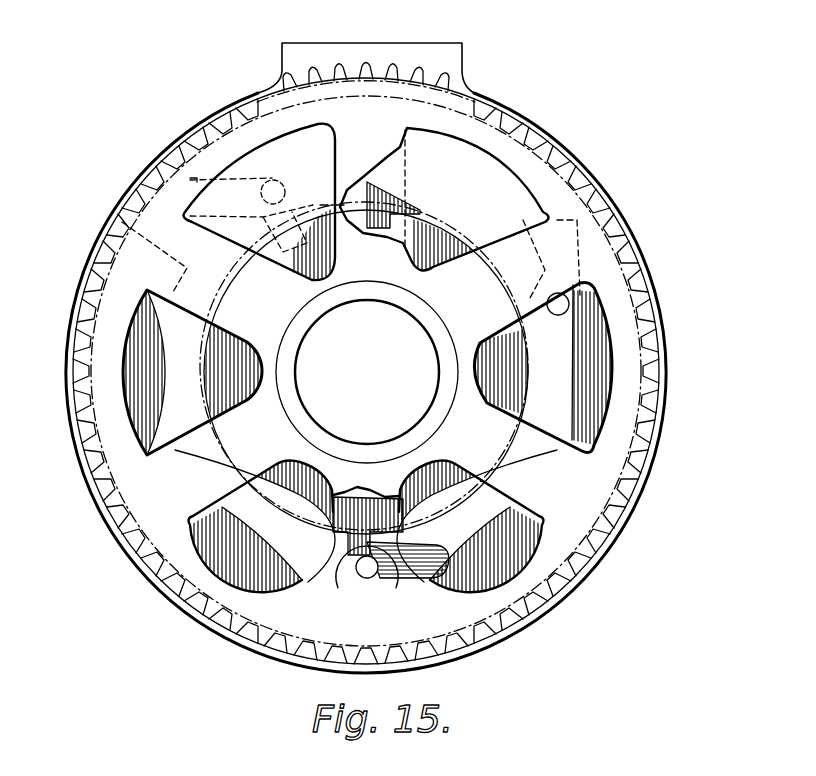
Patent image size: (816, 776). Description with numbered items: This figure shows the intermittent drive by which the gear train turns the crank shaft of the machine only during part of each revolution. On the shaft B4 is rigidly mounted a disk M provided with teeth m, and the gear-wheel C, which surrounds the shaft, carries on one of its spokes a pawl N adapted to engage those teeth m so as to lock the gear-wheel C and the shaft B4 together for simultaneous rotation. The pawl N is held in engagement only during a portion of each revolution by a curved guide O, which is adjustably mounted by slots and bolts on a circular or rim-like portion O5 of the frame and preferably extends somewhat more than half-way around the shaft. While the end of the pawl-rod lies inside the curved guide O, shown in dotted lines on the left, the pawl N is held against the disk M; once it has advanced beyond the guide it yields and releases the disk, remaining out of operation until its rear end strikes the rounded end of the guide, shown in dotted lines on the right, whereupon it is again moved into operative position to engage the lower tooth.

The circular or rim-like portion of the frame O5 is at (397, 54).
The gear-wheel C is at (590, 483).
The shaft B4 is at (367, 372).
The disk M is at (503, 368).
The curved guide O is at (140, 386).
The teeth m is at (398, 192).
The pawl N is at (440, 545).